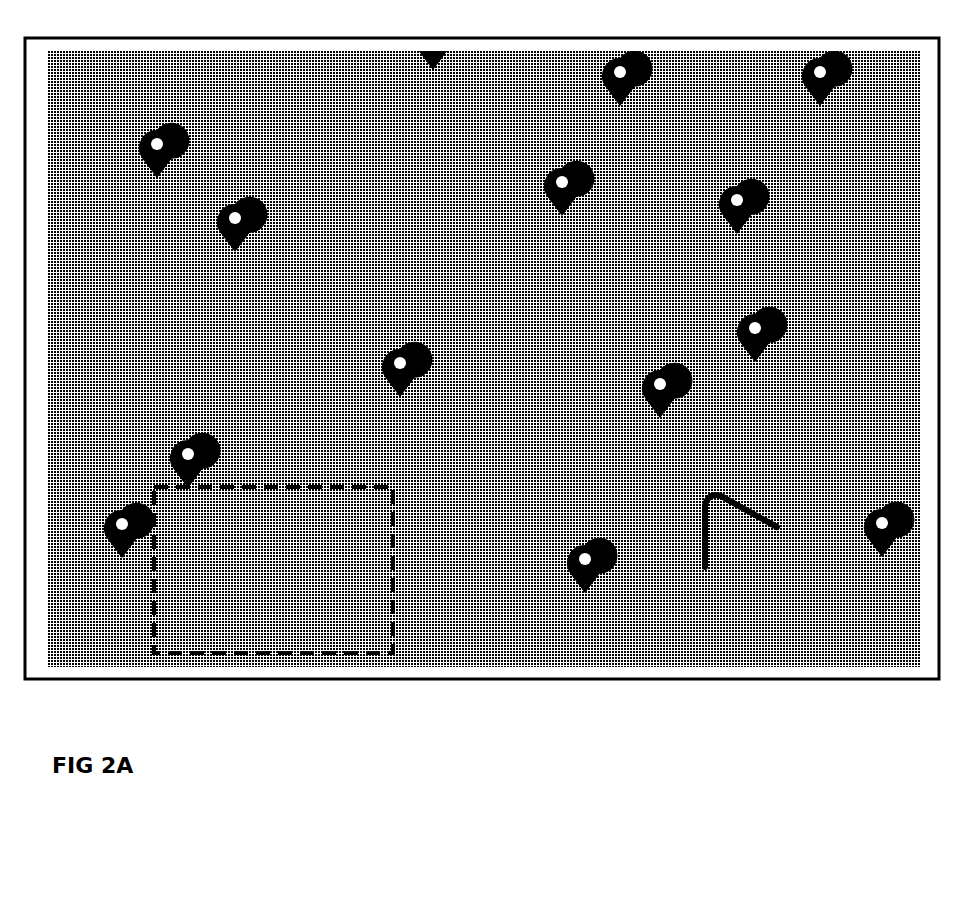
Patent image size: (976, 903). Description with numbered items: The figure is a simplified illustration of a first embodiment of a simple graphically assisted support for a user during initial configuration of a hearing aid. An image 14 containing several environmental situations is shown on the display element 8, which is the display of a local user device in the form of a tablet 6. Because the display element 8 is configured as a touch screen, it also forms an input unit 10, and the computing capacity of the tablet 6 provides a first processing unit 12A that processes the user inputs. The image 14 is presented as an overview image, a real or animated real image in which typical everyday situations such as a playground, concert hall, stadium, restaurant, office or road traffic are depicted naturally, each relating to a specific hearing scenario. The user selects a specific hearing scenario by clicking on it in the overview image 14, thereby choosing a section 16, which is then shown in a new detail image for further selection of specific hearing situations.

The image 14 is at (680, 603).
The section 16 is at (397, 622).
The tablet 6 is at (278, 680).
The display element 8 is at (278, 680).
The input unit 10 is at (278, 680).
The first processing unit 12A is at (225, 670).